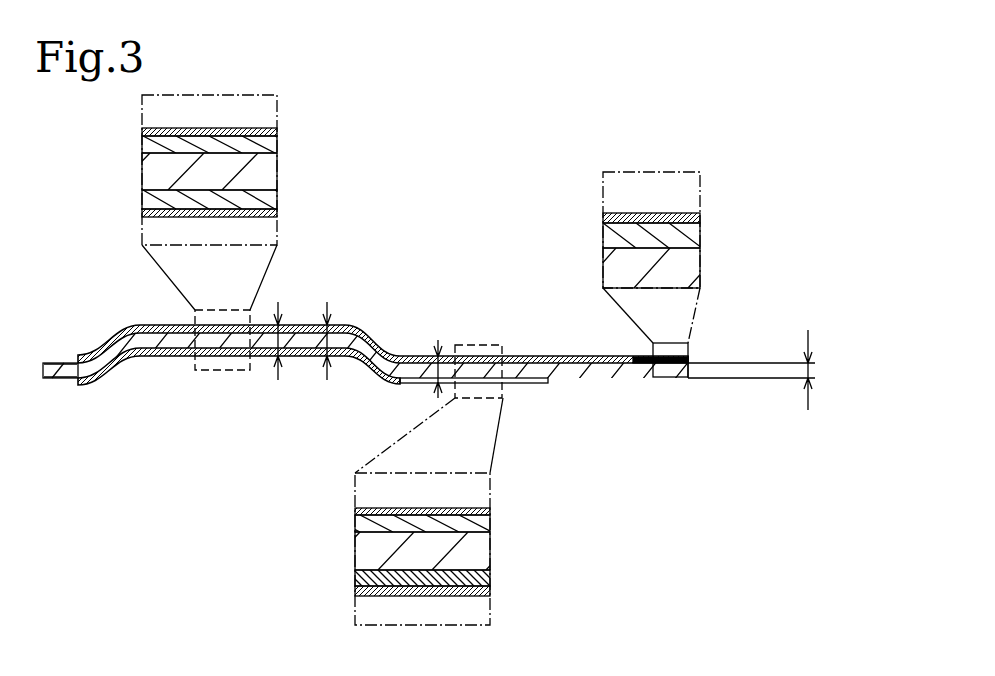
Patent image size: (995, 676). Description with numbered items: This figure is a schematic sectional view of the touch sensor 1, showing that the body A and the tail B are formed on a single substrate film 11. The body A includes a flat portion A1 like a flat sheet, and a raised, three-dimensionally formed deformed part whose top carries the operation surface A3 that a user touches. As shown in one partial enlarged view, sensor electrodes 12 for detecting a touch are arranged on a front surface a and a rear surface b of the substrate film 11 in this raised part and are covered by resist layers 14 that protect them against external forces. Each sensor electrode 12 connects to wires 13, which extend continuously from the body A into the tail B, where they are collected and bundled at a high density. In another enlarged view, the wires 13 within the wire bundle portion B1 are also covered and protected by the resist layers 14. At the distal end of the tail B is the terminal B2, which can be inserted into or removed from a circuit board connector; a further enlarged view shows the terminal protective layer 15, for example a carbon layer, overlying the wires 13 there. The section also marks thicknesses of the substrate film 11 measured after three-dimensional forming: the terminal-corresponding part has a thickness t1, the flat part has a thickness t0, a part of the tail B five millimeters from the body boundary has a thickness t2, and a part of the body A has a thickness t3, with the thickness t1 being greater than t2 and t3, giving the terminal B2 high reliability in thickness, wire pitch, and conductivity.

The touch sensor 1 is at (403, 322).
The substrate film 11 is at (278, 170).
The sensor electrodes 12 is at (278, 145).
The wires 13 is at (705, 236).
The resist layers 14 is at (142, 133).
The terminal protective layer 15 is at (705, 218).
The body A is at (145, 362).
The flat portion A1 is at (67, 362).
The operation surface A3 is at (170, 325).
The tail B is at (571, 382).
The wire bundle portion B1 is at (477, 345).
The terminal B2 is at (668, 357).
The front surface a is at (584, 357).
The rear surface b is at (636, 380).
The thickness of flat part t0 is at (290, 338).
The thickness of terminal-corresponding part t1 is at (769, 370).
The thickness of tail part t2 is at (428, 382).
The thickness of body part t3 is at (337, 338).